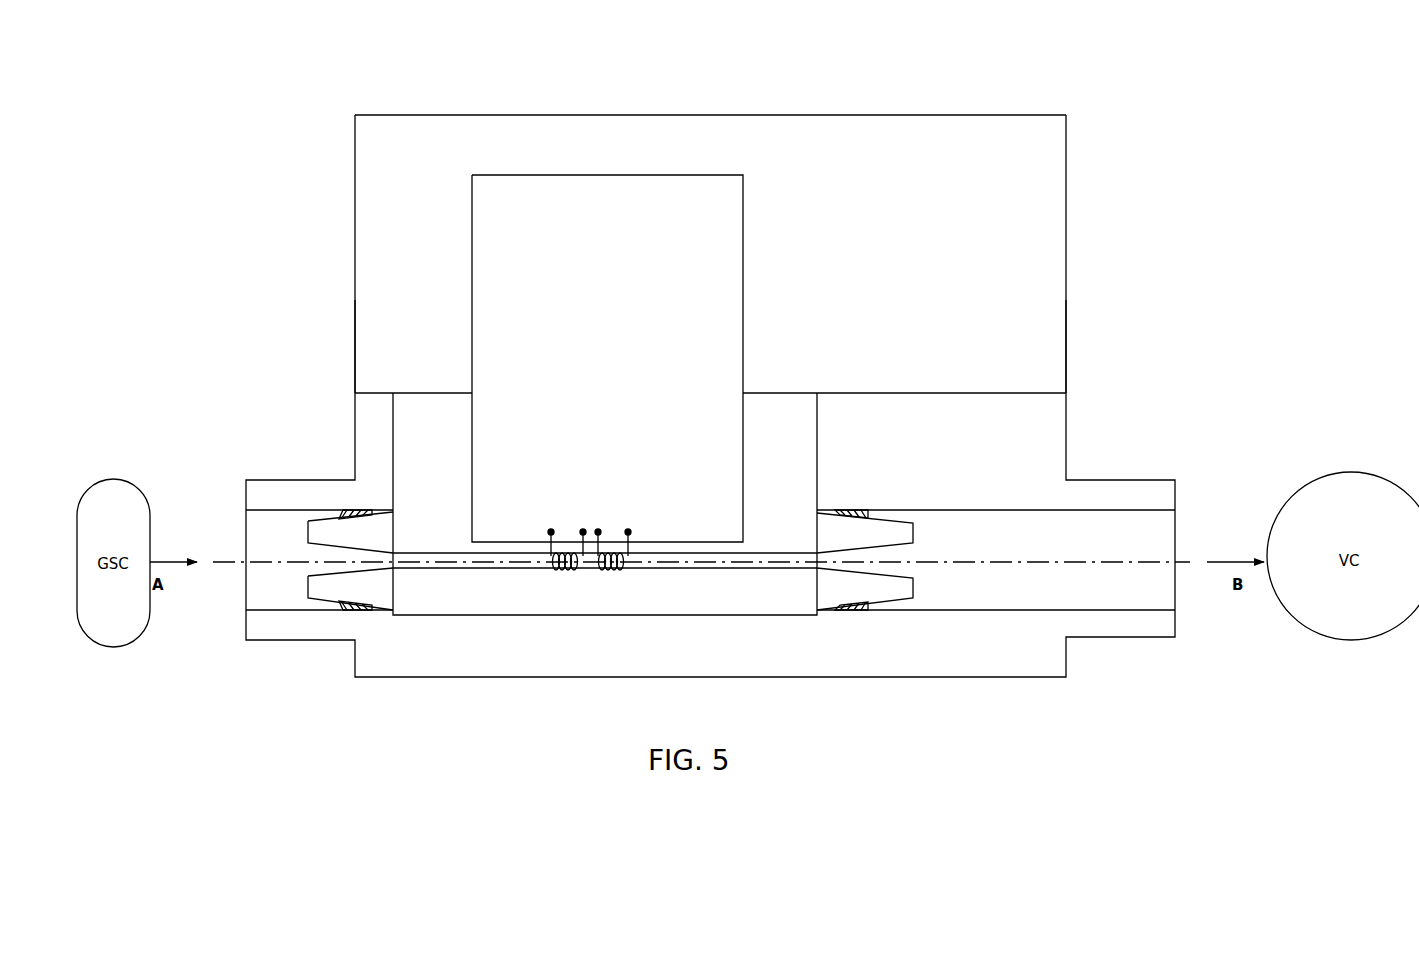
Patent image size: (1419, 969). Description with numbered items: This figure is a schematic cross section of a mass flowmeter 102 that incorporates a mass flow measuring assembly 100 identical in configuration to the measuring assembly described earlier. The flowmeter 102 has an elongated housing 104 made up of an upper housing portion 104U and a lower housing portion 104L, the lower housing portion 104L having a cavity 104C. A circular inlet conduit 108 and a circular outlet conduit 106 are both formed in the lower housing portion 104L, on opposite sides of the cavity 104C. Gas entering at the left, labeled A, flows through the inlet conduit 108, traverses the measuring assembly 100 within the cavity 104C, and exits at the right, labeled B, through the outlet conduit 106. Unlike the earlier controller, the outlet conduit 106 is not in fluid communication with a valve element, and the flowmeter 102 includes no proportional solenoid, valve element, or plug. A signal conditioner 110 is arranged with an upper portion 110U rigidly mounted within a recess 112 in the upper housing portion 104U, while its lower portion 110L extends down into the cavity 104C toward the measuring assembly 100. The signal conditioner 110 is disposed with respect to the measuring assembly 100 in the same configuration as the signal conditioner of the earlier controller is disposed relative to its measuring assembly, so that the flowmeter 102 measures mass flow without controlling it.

The mass flow measuring assembly 100 is at (718, 590).
The mass flowmeter 102 is at (652, 88).
The housing 104 is at (448, 113).
The upper housing portion 104U is at (353, 255).
The lower housing portion 104L is at (353, 432).
The cavity 104C is at (817, 441).
The outlet conduit 106 is at (963, 595).
The inlet conduit 108 is at (258, 540).
The signal conditioner 110 is at (636, 173).
The upper portion of signal conditioner 110U is at (470, 230).
The lower portion of signal conditioner 110L is at (468, 440).
The recess 112 is at (472, 298).